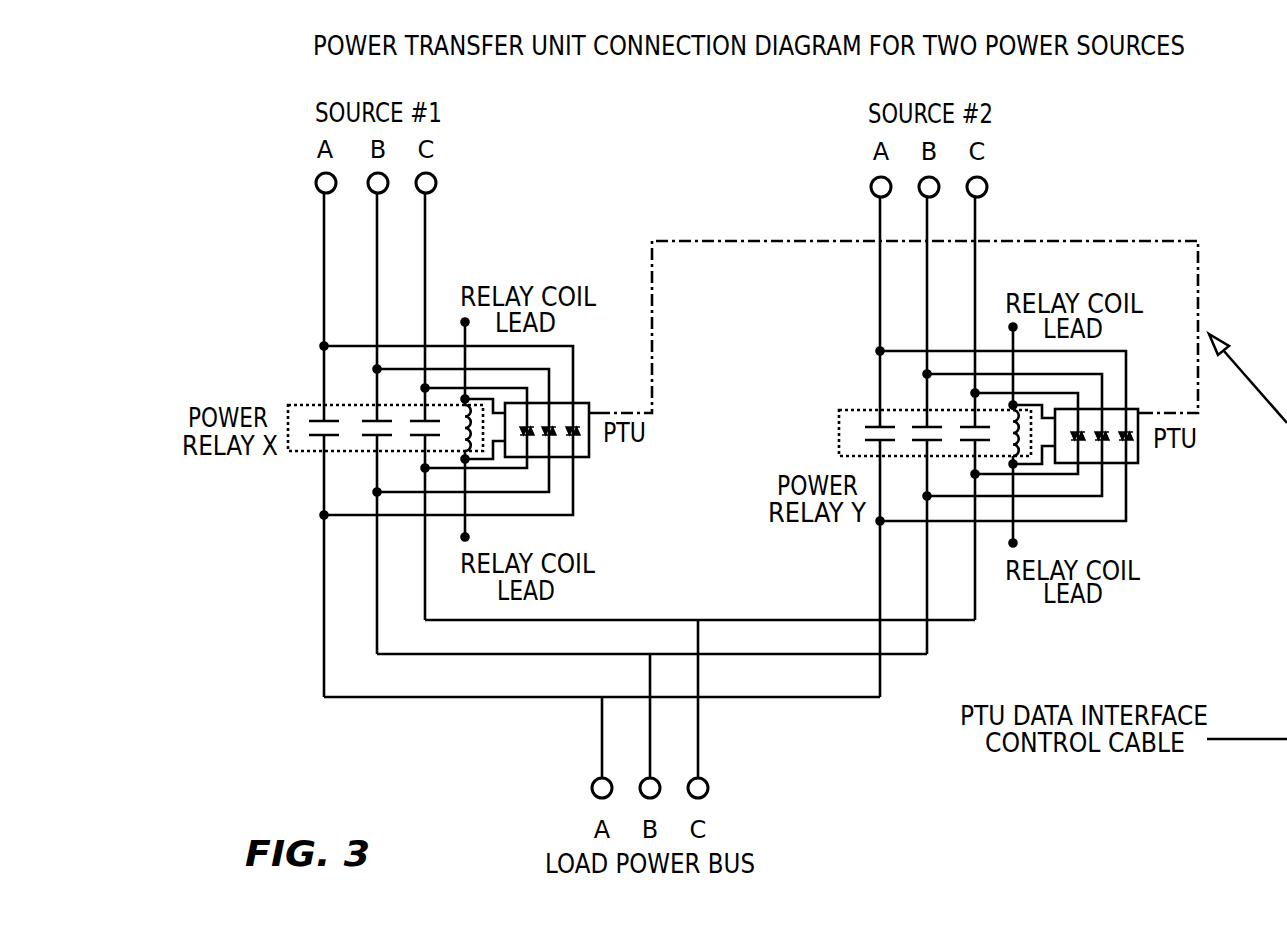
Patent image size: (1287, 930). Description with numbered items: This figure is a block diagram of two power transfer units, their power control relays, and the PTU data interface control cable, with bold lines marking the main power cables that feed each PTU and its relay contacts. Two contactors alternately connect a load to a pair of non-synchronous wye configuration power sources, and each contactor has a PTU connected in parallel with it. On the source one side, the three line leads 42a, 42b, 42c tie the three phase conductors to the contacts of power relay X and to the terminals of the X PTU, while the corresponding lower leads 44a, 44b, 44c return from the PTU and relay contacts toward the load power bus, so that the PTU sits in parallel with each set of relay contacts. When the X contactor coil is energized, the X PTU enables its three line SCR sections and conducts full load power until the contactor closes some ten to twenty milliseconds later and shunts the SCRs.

The phase A upper relay lead 42a is at (324, 346).
The phase B upper relay lead 42b is at (377, 369).
The phase C upper relay lead 42c is at (425, 388).
The phase A lower relay lead 44a is at (324, 515).
The phase B lower relay lead 44b is at (377, 492).
The phase C lower relay lead 44c is at (425, 468).